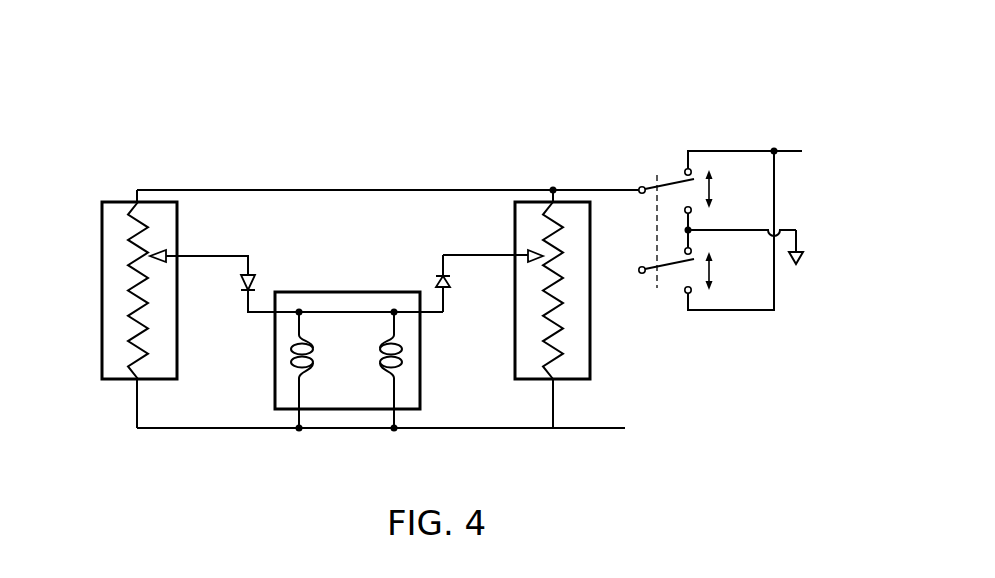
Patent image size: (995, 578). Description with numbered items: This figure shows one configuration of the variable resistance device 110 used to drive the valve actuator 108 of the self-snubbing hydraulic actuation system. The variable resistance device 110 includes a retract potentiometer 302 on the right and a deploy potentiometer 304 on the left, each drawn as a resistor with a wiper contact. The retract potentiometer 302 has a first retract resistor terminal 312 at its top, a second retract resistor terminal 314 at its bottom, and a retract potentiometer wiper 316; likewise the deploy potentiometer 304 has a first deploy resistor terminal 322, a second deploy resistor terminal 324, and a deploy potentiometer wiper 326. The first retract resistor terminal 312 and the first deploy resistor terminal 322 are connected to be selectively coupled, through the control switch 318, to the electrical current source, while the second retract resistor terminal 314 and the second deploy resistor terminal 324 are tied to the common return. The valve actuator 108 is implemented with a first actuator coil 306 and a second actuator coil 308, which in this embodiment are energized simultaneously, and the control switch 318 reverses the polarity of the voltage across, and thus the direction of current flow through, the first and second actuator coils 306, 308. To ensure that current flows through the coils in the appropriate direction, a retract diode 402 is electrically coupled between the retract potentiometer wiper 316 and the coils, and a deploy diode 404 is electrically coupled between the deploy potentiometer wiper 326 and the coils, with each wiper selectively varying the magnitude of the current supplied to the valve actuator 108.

The variable resistance device 110 is at (446, 117).
The valve actuator 108 is at (345, 292).
The retract potentiometer circuit 302 is at (590, 350).
The deploy potentiometer circuit 304 is at (102, 348).
The first actuator coil 306 is at (380, 370).
The second actuator coil 308 is at (313, 350).
The first retract resistor terminal 312 is at (550, 200).
The second retract resistor terminal 314 is at (556, 382).
The retract potentiometer wiper 316 is at (516, 253).
The control switch 318 is at (617, 153).
The first deploy resistor terminal 322 is at (137, 200).
The second deploy resistor terminal 324 is at (137, 381).
The deploy potentiometer wiper 326 is at (178, 256).
The retract diode 402 is at (444, 290).
The deploy diode 404 is at (250, 272).